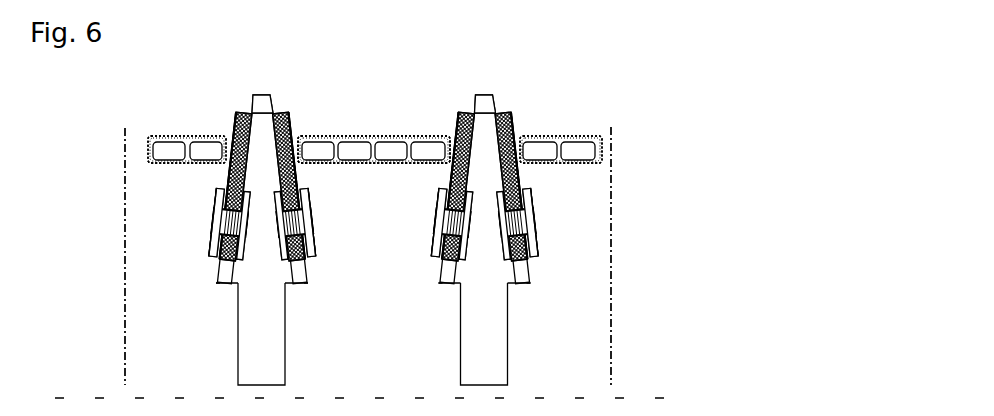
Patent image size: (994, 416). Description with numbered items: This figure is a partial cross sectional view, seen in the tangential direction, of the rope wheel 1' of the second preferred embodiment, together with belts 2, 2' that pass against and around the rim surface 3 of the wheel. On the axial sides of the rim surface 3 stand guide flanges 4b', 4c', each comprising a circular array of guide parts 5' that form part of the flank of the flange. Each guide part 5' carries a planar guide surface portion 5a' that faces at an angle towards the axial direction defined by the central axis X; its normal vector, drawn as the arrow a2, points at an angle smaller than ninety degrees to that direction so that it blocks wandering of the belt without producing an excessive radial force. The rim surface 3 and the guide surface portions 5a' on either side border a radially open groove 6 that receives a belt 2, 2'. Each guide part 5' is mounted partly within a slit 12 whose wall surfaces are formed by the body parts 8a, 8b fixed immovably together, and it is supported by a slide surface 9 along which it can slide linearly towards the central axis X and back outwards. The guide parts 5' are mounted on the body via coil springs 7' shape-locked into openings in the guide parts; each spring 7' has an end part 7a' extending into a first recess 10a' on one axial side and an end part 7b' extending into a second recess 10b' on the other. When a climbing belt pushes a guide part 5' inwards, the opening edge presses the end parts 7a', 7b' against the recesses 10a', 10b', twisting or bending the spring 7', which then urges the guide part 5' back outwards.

The rope wheel 1' is at (329, 256).
The belt 2 is at (393, 112).
The belt 2' is at (375, 149).
The rim surface 3 is at (146, 160).
The guide flange 4b' is at (262, 64).
The guide flange 4c' is at (482, 68).
The guide part 5' is at (368, 160).
The guide surface portion 5a' is at (357, 175).
The groove 6 is at (355, 131).
The spring 7' is at (375, 223).
The end part 7a' is at (321, 224).
The end part 7b' is at (411, 234).
The body part 8a is at (183, 310).
The body part 8b is at (243, 321).
The slide surface 9 is at (224, 285).
The first recess 10a' is at (322, 235).
The second recess 10b' is at (416, 210).
The slit 12 is at (219, 267).
The normal vector a2 is at (289, 131).
The central axis X is at (376, 393).